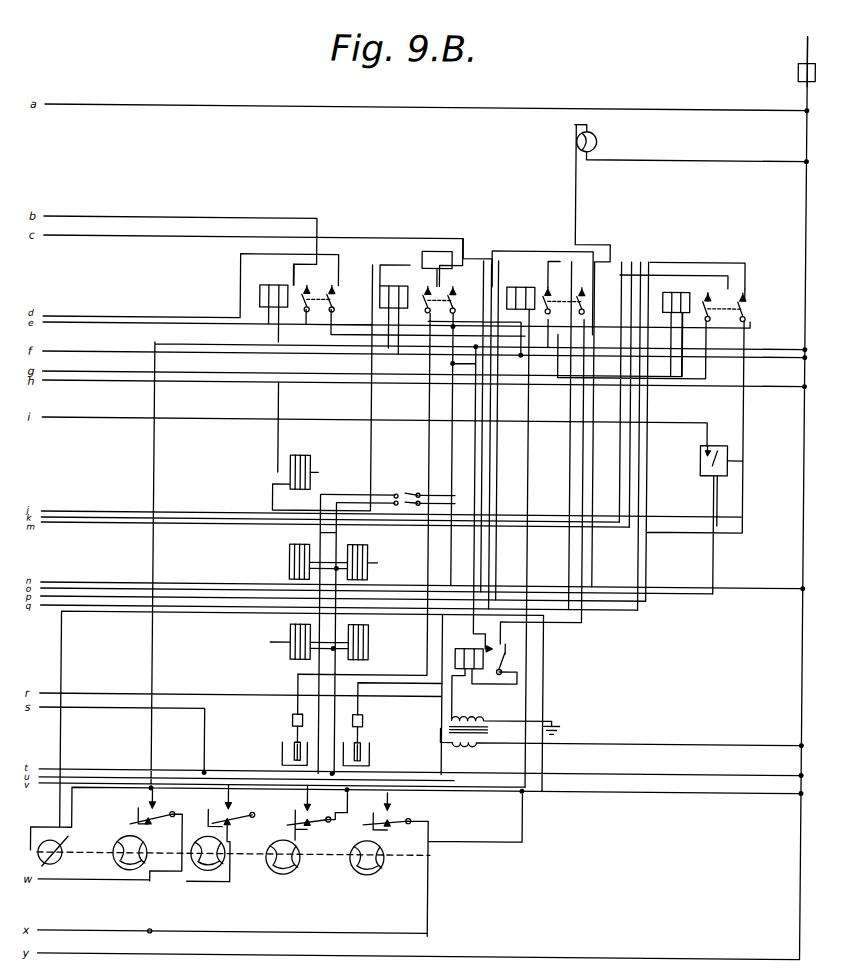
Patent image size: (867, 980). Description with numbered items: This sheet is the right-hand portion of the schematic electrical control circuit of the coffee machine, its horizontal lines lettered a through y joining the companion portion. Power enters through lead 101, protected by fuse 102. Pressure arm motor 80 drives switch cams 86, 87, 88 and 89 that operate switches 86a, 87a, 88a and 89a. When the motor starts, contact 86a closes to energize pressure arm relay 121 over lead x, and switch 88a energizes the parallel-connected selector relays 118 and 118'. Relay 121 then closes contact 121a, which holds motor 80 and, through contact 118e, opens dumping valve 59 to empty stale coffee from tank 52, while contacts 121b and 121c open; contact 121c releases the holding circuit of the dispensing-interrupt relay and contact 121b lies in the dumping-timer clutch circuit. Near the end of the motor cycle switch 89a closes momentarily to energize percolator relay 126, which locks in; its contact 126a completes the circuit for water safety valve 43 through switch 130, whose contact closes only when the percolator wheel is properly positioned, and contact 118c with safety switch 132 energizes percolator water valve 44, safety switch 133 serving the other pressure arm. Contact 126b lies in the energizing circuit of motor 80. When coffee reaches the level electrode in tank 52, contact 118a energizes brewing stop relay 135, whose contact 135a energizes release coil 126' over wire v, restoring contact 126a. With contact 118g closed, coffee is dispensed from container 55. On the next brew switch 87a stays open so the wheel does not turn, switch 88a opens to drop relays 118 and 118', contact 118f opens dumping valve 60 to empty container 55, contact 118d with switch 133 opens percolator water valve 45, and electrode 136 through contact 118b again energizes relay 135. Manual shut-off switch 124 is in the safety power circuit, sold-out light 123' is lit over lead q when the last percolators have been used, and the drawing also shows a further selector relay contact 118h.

The lead 101 is at (802, 42).
The fuses 102 is at (797, 70).
The pressure arm relay 121 is at (258, 292).
The contact of pressure arm relay 121a is at (270, 273).
The contact of pressure arm relay 121b is at (307, 283).
The contact of pressure arm relay 121c is at (332, 283).
The percolator relay 126 is at (394, 309).
The contact of percolator relay 126a is at (439, 291).
The percolator relay release coil 126' is at (430, 246).
The contact of percolator relay 126b is at (492, 261).
The selector relay 118 is at (542, 293).
The contact of selector relay 118a is at (528, 297).
The contact of selector relay 118b is at (566, 300).
The contact of selector relay 118c is at (595, 257).
The contact of selector relay 118d is at (610, 265).
The selector relay 118' is at (682, 319).
The contact of selector relay 118e is at (708, 285).
The contact of selector relay 118g is at (740, 285).
The relay contact 118h is at (742, 288).
The contact of selector relay 118f is at (745, 315).
The sold-out light 123' is at (690, 143).
The water safety valve 43 is at (314, 472).
The percolator water valve 44 is at (290, 560).
The percolator water valve 45 is at (364, 566).
The dumping valve 59 is at (288, 642).
The dumping valve 60 is at (368, 635).
The safety switch 132 is at (403, 490).
The safety switch 133 is at (403, 505).
The manual shut-off switch 124 is at (705, 470).
The brewing stop relay 135 is at (485, 684).
The contact of brewing stop relay 135a is at (510, 655).
The wheel position switch 130 is at (295, 730).
The container 52 is at (283, 756).
The electrode 136 is at (360, 732).
The container 55 is at (370, 755).
The pressure arm motor 80 is at (62, 842).
The switch cam 86 is at (113, 860).
The contact 86a is at (152, 800).
The switch cam 87 is at (222, 875).
The switch 87a is at (226, 833).
The switch cam 88 is at (283, 872).
The switch 88a is at (311, 813).
The cam 89 is at (372, 862).
The switch 89a is at (410, 814).